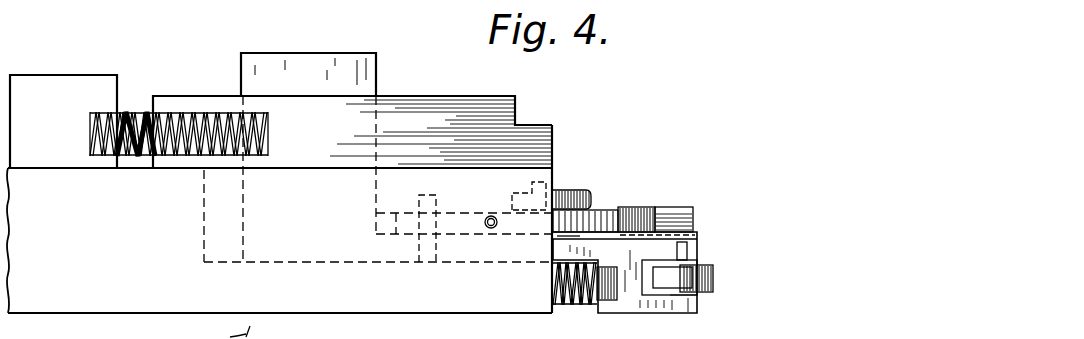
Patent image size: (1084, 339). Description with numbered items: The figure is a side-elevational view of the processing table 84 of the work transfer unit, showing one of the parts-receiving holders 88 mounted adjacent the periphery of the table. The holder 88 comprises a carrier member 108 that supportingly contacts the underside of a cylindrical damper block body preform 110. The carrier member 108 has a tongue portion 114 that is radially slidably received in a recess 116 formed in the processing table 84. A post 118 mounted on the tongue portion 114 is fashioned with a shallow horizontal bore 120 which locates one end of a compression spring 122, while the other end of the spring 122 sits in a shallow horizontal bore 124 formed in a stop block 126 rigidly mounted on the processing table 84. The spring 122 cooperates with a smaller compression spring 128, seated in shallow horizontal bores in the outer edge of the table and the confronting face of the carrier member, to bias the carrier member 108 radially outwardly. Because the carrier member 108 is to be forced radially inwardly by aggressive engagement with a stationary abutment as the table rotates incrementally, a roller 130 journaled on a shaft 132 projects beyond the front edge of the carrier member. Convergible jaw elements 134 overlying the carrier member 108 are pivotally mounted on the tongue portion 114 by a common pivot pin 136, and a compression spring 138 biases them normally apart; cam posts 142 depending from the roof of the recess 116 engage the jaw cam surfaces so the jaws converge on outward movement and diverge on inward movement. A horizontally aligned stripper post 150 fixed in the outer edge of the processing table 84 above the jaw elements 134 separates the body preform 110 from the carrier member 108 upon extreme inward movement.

The processing table 84 is at (90, 280).
The parts-receiving holder 88 is at (601, 139).
The carrier member 108 is at (713, 243).
The damper block body preform 110 is at (677, 207).
The tongue portion 114 is at (480, 258).
The recess 116 is at (291, 268).
The post 118 is at (335, 65).
The bore 120 is at (272, 118).
The compression spring 122 is at (130, 118).
The bore 124 is at (92, 127).
The stop block 126 is at (28, 80).
The compression spring 128 is at (577, 302).
The roller 130 is at (714, 278).
The shaft 132 is at (692, 311).
The jaw elements 134 is at (636, 207).
The pivot pin 136 is at (420, 243).
The compression spring 138 is at (492, 214).
The cam posts 142 is at (538, 222).
The stripper post 150 is at (592, 190).